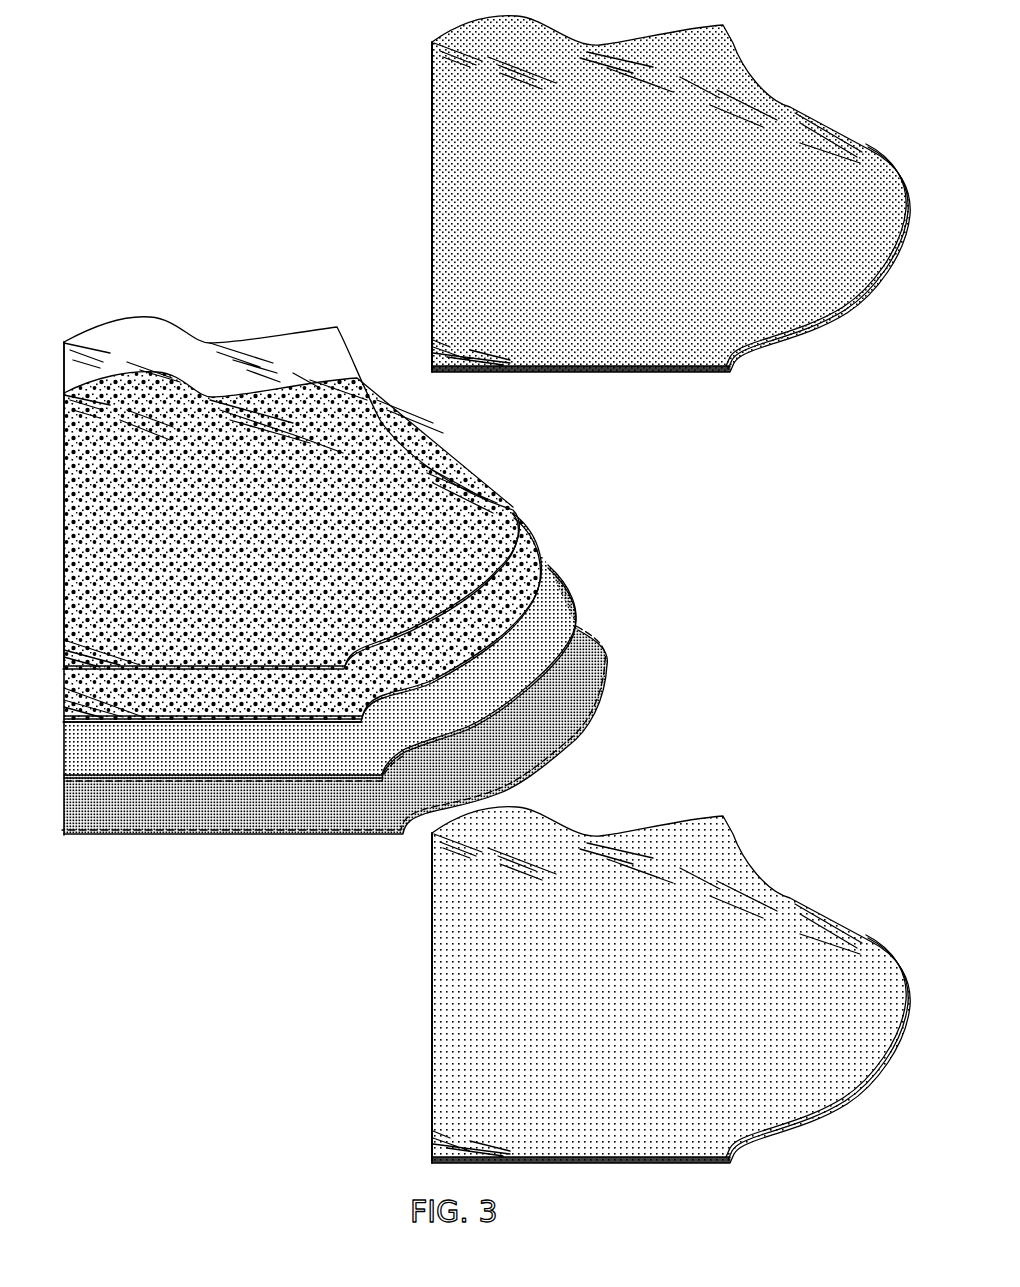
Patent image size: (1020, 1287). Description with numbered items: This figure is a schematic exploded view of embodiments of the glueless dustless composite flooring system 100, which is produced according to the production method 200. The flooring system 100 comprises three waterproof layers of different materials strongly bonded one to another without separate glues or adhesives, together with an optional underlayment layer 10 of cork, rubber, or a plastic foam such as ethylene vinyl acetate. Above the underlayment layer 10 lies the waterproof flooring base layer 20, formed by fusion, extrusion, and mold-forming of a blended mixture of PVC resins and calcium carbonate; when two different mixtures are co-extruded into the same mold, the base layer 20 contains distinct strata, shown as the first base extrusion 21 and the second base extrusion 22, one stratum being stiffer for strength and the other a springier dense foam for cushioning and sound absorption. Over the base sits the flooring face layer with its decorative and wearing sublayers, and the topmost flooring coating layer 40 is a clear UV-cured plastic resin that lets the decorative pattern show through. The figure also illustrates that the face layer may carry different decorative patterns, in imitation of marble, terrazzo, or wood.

The production method 200 is at (196, 118).
The glueless dustless composite flooring system 100 is at (210, 160).
The flooring coating layer 40 is at (482, 475).
The flooring base layer 20 is at (557, 590).
The underlayment layer 10 is at (590, 670).
The second base extrusion 22 is at (64, 775).
The first base extrusion 21 is at (64, 781).